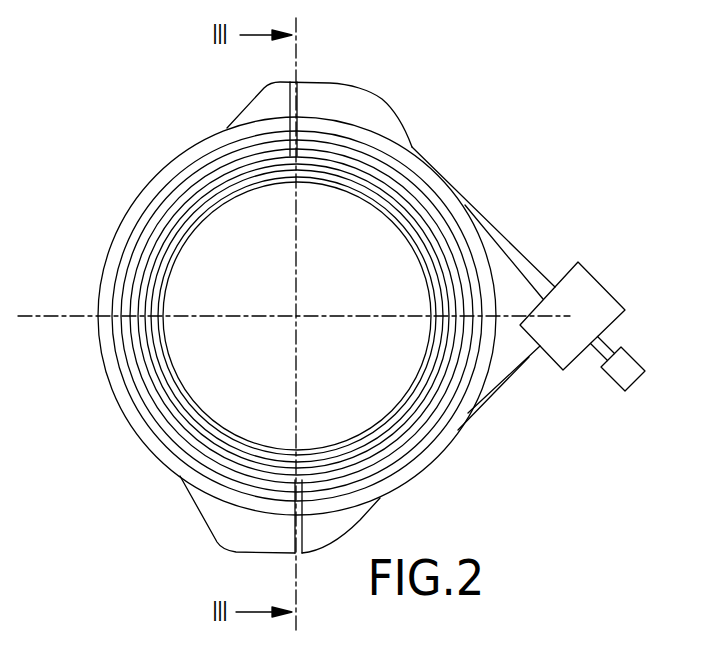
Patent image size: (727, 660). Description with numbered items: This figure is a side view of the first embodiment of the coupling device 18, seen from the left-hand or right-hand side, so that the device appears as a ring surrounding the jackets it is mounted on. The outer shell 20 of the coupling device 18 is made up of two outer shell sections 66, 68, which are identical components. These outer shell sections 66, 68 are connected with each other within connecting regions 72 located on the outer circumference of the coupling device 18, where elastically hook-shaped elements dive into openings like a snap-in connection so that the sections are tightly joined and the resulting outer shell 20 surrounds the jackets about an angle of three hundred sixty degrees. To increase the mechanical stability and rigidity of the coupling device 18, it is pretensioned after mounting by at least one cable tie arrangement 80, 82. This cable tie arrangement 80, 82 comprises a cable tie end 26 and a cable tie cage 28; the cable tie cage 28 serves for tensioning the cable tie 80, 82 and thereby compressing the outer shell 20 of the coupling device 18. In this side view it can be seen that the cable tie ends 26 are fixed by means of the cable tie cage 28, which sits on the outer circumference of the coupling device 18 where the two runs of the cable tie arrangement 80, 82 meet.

The coupling device 18 is at (488, 148).
The outer shell 20 is at (168, 160).
The cable tie end 26 is at (630, 372).
The cable tie cage 28 is at (593, 292).
The outer shell section 66 is at (143, 188).
The outer shell section 68 is at (415, 468).
The connecting region 72 is at (348, 102).
The cable tie arrangement 80 is at (508, 242).
The cable tie arrangement 82 is at (512, 382).